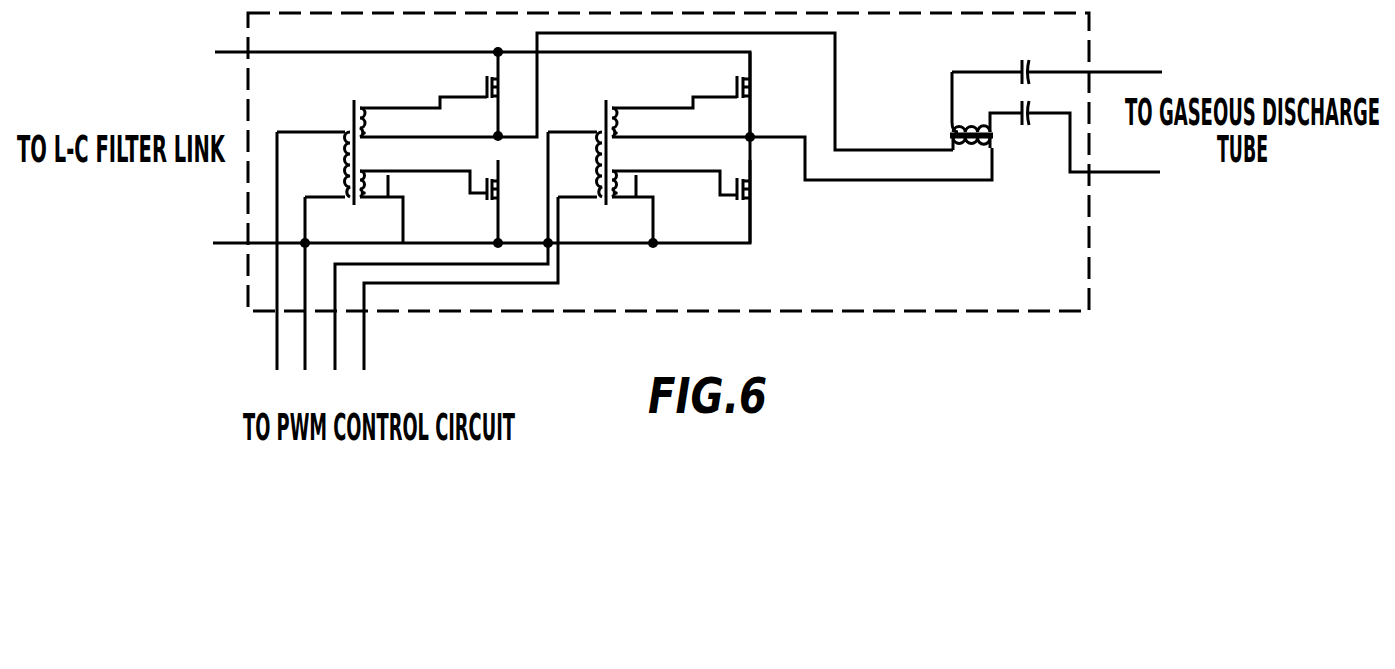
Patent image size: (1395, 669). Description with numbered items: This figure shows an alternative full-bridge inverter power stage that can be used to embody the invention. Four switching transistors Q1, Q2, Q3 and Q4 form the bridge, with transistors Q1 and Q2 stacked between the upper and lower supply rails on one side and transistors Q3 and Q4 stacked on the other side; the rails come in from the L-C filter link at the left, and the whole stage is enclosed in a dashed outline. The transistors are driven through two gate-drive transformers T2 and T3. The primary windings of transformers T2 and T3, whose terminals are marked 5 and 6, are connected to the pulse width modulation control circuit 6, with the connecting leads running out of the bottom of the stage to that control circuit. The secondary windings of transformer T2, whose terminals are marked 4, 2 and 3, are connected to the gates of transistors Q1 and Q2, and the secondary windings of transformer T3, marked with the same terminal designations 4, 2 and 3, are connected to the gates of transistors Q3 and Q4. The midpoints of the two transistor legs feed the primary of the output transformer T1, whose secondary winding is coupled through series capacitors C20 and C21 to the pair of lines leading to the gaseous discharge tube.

The transistor Q1 is at (499, 86).
The transistor Q2 is at (499, 188).
The transistor Q3 is at (751, 85).
The transistor Q4 is at (751, 187).
The transformer T1 is at (993, 134).
The transformer T2 is at (356, 115).
The transformer T3 is at (607, 118).
The capacitor C20 is at (1057, 55).
The capacitor C21 is at (1091, 127).
The transformer winding terminal 2 is at (555, 125).
The transformer winding terminal 3 is at (548, 191).
The transformer winding terminal 4 is at (548, 92).
The transformer primary winding terminal 5 is at (437, 114).
The pulse width modulation control circuit 6 is at (451, 185).